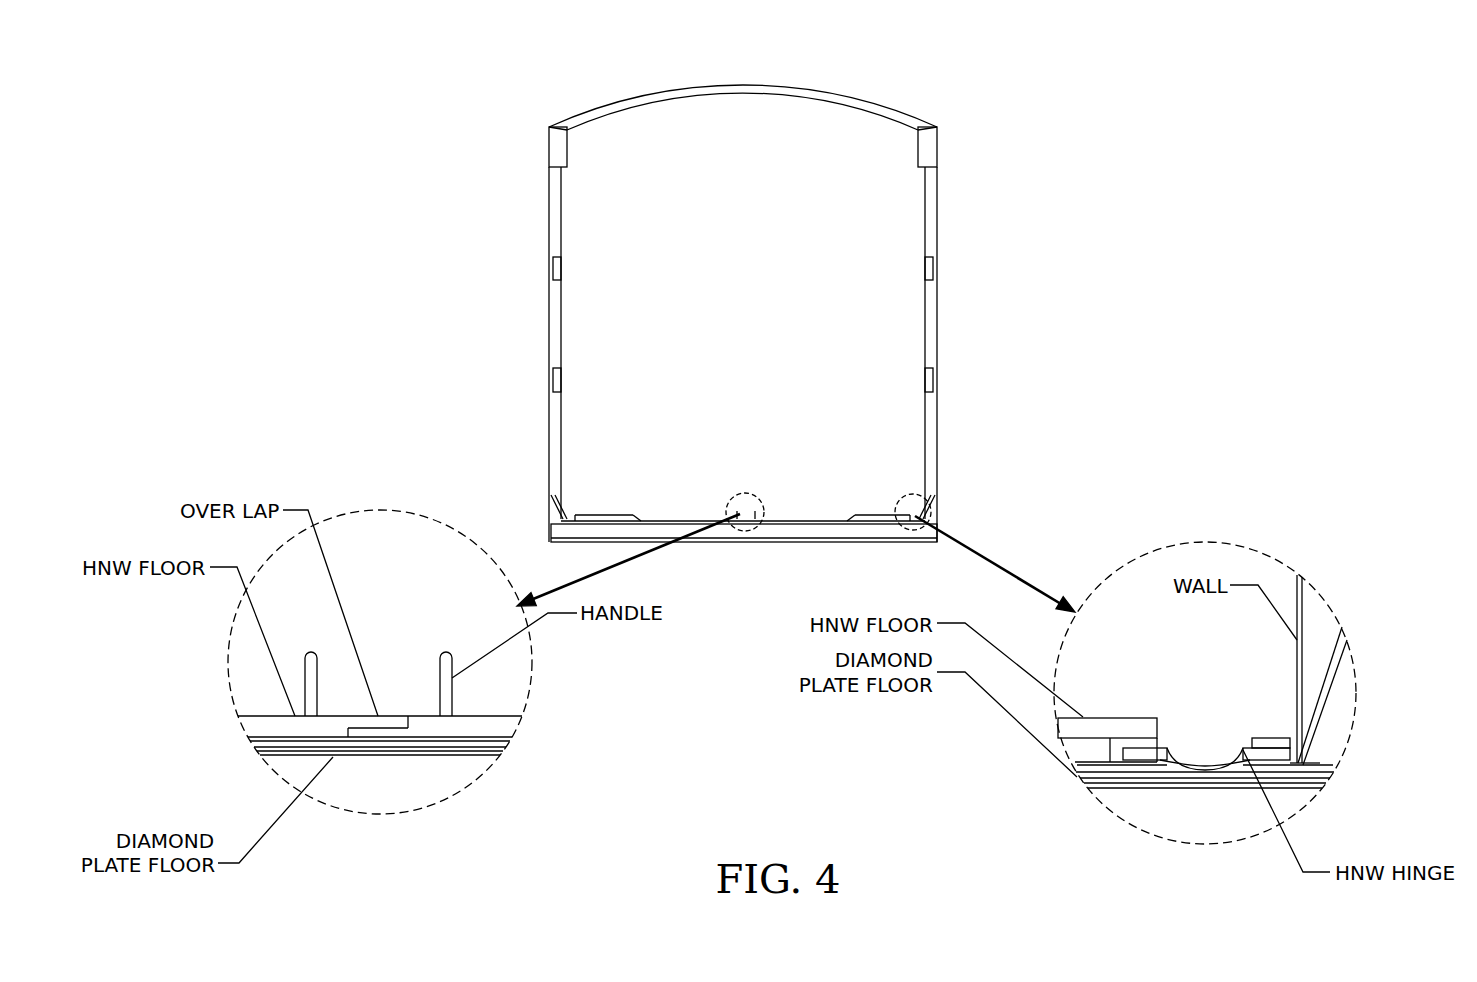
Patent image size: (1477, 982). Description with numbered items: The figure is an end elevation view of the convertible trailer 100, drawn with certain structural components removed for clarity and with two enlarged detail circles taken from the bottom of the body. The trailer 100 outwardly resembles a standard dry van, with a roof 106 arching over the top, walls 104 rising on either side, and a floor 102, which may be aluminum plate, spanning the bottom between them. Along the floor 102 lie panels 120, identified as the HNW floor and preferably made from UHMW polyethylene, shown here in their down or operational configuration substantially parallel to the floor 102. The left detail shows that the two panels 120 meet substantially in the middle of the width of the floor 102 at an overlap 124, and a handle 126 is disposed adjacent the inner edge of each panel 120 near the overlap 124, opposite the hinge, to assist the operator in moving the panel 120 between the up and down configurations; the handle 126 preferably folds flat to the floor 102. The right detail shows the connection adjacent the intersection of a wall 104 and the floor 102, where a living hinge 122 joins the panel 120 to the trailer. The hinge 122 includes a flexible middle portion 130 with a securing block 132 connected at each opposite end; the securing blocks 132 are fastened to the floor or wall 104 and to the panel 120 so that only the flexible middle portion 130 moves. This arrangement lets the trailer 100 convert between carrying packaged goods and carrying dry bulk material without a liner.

The convertible trailer 100 is at (462, 93).
The floor 102 is at (743, 543).
The wall 104 is at (549, 331).
The roof 106 is at (742, 86).
The panel 120 is at (264, 723).
The hinge 122 is at (1227, 722).
The overlap 124 is at (397, 712).
The handle 126 is at (309, 652).
The flexible middle portion 130 is at (1205, 762).
The securing block 132 is at (1276, 746).